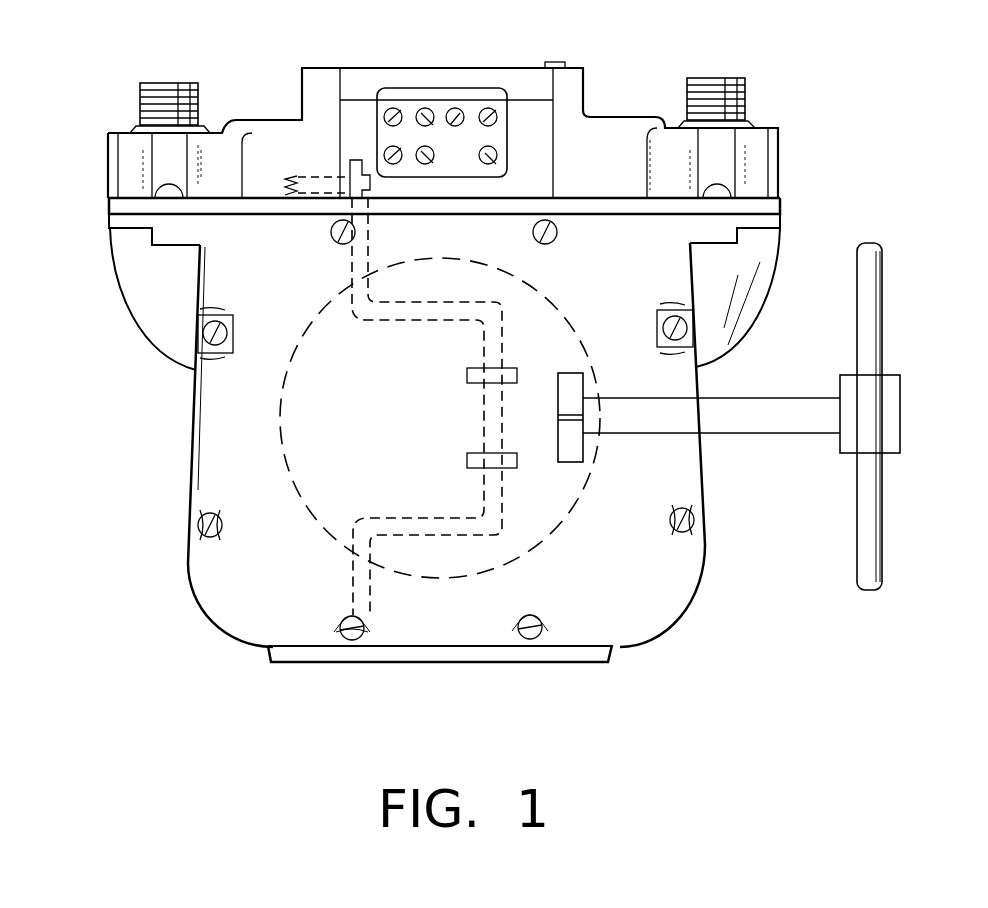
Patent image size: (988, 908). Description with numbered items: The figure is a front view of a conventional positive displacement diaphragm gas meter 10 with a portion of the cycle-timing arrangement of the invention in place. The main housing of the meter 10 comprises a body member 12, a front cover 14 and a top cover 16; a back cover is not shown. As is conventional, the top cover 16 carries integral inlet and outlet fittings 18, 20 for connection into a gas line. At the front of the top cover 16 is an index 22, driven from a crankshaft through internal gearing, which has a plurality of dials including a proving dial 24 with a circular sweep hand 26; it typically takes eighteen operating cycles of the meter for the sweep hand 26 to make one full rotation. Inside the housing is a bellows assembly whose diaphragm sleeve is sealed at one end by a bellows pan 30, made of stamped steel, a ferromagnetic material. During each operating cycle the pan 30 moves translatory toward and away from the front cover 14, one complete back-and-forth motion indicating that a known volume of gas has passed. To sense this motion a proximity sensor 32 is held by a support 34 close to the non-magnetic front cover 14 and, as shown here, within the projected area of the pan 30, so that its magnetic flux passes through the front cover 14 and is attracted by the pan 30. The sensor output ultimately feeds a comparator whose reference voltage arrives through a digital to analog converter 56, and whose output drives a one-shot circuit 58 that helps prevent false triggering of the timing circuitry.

The diaphragm gas meter 10 is at (158, 435).
The body member 12 is at (270, 655).
The front cover 14 is at (227, 600).
The top cover 16 is at (281, 118).
The inlet fitting 18 is at (178, 82).
The outlet fitting 20 is at (697, 78).
The index 22 is at (427, 88).
The proving dial 24 is at (497, 163).
The circular sweep hand 26 is at (490, 153).
The bellows pan 30 is at (548, 293).
The proximity sensor 32 is at (562, 485).
The support 34 is at (818, 433).
The digital to analog converter 56 is at (455, 320).
The one-shot circuit 58 is at (340, 175).